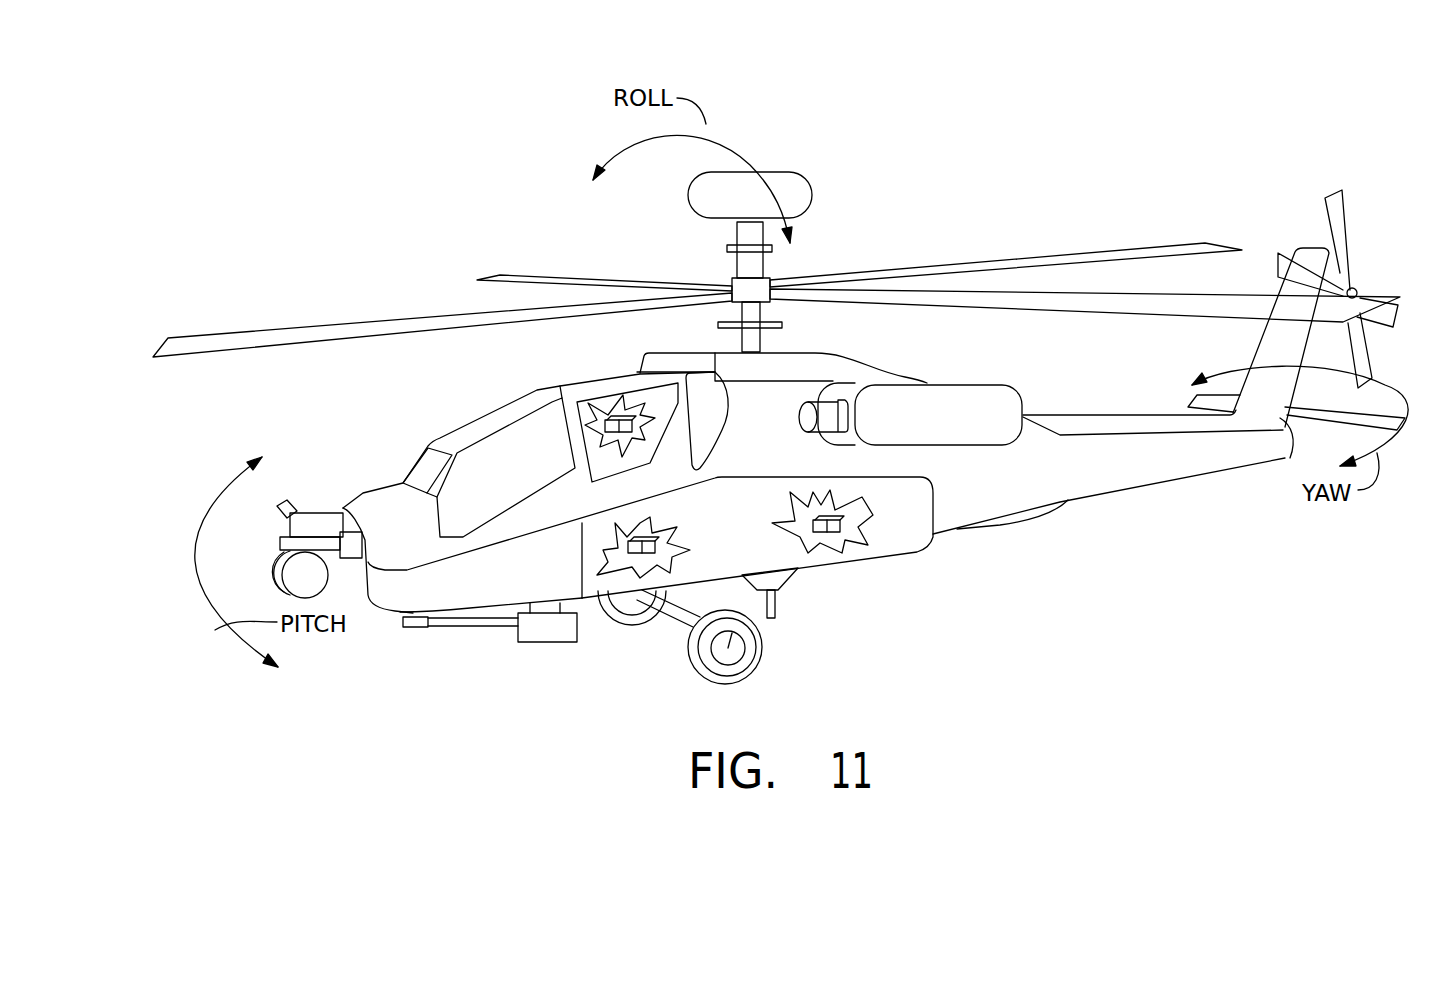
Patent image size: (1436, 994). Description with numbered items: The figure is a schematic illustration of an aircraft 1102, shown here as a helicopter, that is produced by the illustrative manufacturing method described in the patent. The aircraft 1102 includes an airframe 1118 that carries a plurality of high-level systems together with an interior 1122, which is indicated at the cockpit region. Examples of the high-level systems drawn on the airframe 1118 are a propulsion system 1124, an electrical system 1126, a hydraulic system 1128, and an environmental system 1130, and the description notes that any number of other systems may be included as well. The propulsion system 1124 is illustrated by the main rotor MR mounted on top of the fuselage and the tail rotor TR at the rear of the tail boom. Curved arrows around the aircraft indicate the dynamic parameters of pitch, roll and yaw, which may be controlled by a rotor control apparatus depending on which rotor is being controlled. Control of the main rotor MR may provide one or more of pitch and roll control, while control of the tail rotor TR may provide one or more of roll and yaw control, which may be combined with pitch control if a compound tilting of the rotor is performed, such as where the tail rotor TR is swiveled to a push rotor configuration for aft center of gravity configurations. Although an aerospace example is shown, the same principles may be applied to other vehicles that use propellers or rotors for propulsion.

The aircraft 1102 is at (1160, 195).
The airframe 1118 is at (912, 562).
The interior 1122 is at (487, 472).
The propulsion system 1124 is at (848, 230).
The electrical system 1126 is at (645, 553).
The hydraulic system 1128 is at (830, 532).
The environmental system 1130 is at (613, 416).
The main rotor MR is at (508, 277).
The tail rotor TR is at (1347, 205).